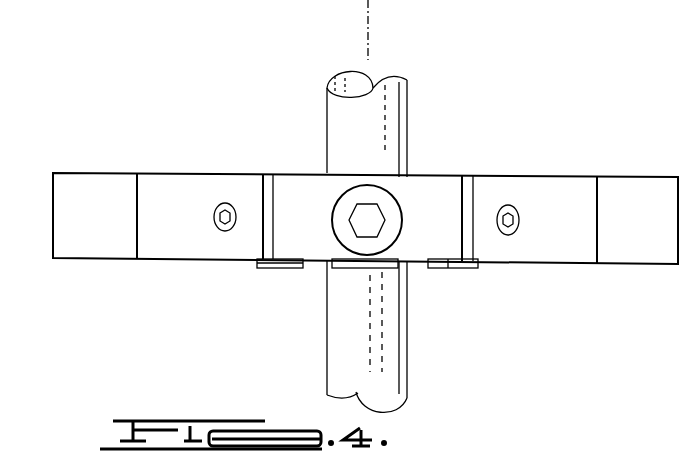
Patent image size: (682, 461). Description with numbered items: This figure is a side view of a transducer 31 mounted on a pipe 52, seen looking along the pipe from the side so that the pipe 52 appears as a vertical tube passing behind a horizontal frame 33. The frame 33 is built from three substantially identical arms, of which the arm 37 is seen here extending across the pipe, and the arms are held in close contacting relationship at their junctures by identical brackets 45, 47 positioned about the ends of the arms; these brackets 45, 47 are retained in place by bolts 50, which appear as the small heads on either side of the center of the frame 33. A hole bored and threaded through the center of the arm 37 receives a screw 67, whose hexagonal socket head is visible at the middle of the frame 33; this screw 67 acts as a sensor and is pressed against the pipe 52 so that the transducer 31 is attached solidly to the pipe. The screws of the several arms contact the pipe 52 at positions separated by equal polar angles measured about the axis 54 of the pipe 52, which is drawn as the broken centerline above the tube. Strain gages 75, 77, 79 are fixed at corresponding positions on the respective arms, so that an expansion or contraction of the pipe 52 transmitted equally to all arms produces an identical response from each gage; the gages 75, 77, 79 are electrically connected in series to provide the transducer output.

The transducer 31 is at (214, 140).
The frame 33 is at (526, 162).
The arm 37 is at (412, 183).
The bracket 45 is at (650, 226).
The bracket 47 is at (106, 222).
The bolts 50 is at (225, 231).
The pipe 52 is at (378, 131).
The axis 54 is at (368, 22).
The screw 67 is at (347, 237).
The strain gage 75 is at (462, 270).
The strain gage 77 is at (364, 265).
The strain gage 79 is at (260, 265).